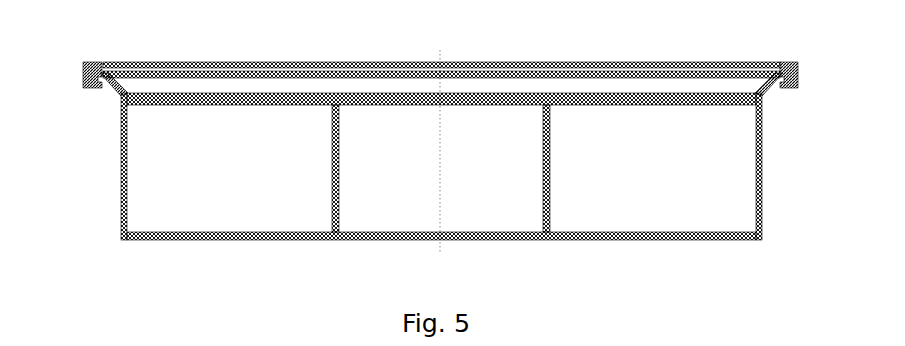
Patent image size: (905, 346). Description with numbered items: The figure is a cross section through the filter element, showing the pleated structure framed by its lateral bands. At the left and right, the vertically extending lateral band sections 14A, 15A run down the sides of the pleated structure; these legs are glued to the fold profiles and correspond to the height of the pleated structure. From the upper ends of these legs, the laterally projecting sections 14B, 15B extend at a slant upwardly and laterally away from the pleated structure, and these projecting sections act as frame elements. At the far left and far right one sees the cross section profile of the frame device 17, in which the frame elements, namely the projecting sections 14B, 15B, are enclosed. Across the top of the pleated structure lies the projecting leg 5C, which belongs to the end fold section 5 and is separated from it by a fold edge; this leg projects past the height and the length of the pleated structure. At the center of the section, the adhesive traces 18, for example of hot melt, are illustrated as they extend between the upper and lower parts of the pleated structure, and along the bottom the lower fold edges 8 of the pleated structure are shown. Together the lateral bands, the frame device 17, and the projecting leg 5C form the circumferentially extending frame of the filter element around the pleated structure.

The end fold section 5 is at (744, 178).
The projecting leg 5C is at (317, 89).
The lower fold edges 8 is at (247, 243).
The lateral band section 14A is at (122, 220).
The laterally projecting section 14B is at (112, 77).
The lateral band section 15A is at (758, 219).
The laterally projecting section 15B is at (766, 77).
The frame device 17 is at (94, 75).
The adhesive traces 18 is at (340, 150).